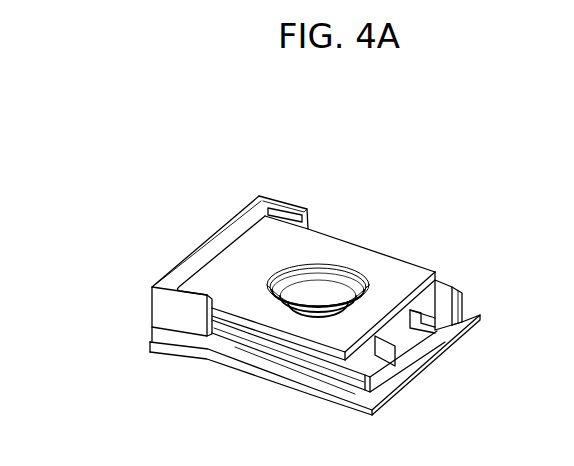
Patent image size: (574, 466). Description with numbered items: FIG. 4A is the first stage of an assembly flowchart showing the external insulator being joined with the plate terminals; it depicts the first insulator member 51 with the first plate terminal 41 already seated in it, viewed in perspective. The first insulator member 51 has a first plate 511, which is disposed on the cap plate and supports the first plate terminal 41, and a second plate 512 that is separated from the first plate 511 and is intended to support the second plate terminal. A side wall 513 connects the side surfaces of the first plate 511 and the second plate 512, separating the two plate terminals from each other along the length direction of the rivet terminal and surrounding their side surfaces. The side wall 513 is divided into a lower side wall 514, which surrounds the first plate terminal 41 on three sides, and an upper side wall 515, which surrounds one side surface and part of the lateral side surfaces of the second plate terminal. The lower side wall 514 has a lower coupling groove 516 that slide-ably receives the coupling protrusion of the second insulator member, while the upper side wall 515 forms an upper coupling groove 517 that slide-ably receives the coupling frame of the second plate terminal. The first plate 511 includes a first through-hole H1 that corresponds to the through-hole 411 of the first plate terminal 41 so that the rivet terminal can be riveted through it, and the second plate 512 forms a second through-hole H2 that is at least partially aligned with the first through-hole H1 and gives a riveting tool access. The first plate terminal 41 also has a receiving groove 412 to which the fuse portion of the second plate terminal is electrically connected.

The first insulator member 51 is at (125, 229).
The side wall 513 is at (78, 295).
The upper side wall 515 is at (160, 307).
The lower side wall 514 is at (175, 356).
The lower coupling groove 516 is at (262, 373).
The upper coupling groove 517 is at (321, 228).
The second plate 512 is at (408, 272).
The through-hole 411 is at (343, 297).
The first plate terminal 41 is at (447, 292).
The receiving groove 412 is at (418, 336).
The first plate 511 is at (415, 375).
The first through-hole H1 is at (307, 308).
The second through-hole H2 is at (330, 270).